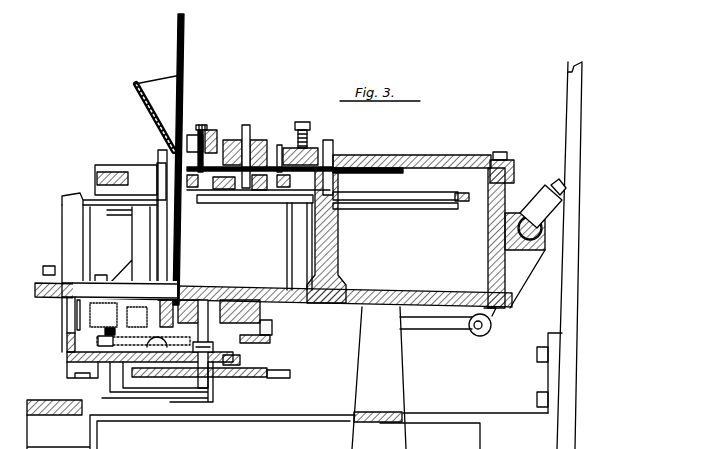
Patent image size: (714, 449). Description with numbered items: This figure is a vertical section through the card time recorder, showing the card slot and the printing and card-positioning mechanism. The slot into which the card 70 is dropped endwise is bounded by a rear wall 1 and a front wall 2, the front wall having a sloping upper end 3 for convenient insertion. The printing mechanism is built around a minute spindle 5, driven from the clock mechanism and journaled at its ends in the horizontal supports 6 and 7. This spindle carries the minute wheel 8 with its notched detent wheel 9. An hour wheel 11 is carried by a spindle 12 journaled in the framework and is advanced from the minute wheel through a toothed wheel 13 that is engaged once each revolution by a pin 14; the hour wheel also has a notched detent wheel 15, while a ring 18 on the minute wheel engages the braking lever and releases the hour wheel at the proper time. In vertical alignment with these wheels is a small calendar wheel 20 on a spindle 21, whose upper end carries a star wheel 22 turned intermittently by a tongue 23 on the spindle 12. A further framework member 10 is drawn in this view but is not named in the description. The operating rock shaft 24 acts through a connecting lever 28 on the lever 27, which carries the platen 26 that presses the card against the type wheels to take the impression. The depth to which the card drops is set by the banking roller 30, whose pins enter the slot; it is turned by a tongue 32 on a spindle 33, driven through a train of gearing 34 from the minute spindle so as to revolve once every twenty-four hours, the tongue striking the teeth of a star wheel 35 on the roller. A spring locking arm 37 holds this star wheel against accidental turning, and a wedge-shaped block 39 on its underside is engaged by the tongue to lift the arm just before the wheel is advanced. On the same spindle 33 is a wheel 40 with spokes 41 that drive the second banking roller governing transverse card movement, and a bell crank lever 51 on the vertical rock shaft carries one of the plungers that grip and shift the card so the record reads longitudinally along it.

The rear wall 1 is at (184, 100).
The front wall 2 is at (160, 165).
The sloping upper end 3 is at (144, 104).
The minute spindle 5 is at (334, 152).
The horizontal support 6 is at (350, 290).
The horizontal support 7 is at (404, 156).
The minute wheel 8 is at (461, 193).
The notched detent wheel 9 is at (403, 210).
The vertical post 10 is at (320, 200).
The hour wheel 11 is at (273, 203).
The spindle 12 is at (254, 150).
The toothed wheel 13 is at (258, 203).
The pin 14 is at (293, 210).
The notched detent wheel 15 is at (280, 148).
The ring 18 is at (392, 194).
The calendar wheel 20 is at (210, 188).
The spindle 21 is at (203, 135).
The star wheel 22 is at (208, 126).
The tongue 23 is at (236, 140).
The rock shaft 24 is at (548, 228).
The platen 26 is at (148, 172).
The lever 27 is at (95, 172).
The connecting lever 28 is at (453, 326).
The banking roller 30 is at (142, 222).
The tongue 32 is at (213, 343).
The spindle 33 is at (212, 338).
The train of gearing 34 is at (288, 308).
The star wheel 35 is at (95, 348).
The locking arm 37 is at (152, 365).
The wedge-shaped block 39 is at (210, 380).
The wheel 40 is at (272, 376).
The spokes 41 is at (379, 378).
The bell crank lever 51 is at (160, 248).
The card 70 is at (185, 37).